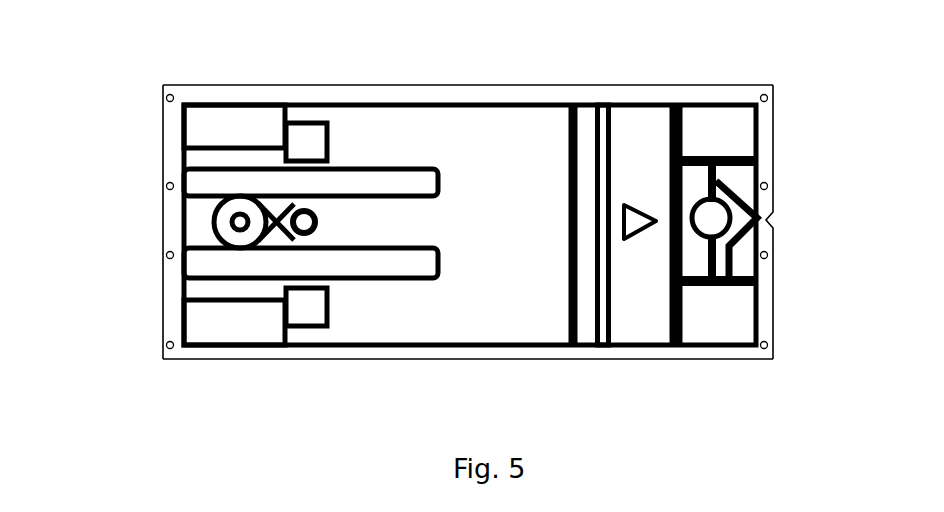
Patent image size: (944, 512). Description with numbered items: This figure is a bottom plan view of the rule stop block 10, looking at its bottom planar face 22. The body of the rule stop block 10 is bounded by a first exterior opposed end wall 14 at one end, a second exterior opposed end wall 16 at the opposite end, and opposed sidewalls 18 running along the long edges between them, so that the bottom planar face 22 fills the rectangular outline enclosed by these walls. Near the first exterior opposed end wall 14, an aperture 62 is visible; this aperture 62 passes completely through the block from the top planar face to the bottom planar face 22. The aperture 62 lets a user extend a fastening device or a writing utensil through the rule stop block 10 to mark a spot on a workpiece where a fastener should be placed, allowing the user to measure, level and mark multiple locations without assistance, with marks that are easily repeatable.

The rule stop block 10 is at (92, 212).
The first exterior opposed end wall 14 is at (775, 280).
The second exterior opposed end wall 16 is at (163, 273).
The opposed sidewalls 18 is at (493, 83).
The bottom planar face 22 is at (362, 325).
The aperture 62 is at (717, 214).